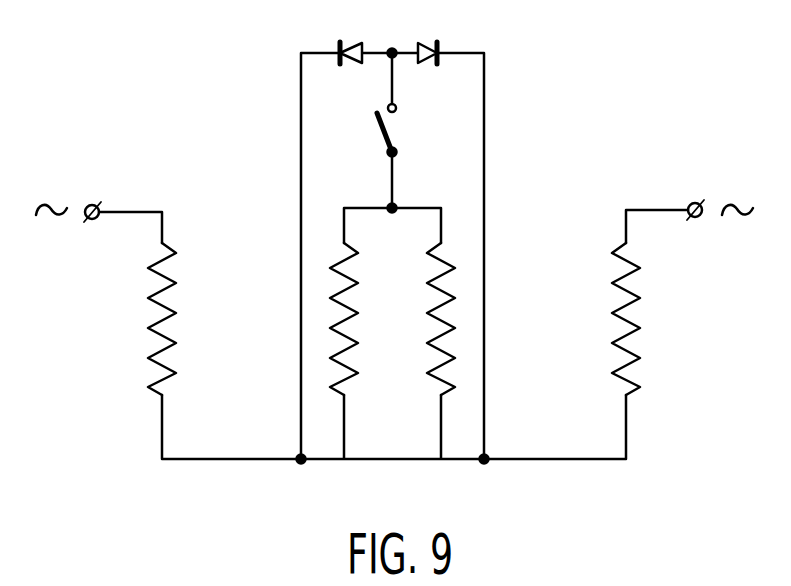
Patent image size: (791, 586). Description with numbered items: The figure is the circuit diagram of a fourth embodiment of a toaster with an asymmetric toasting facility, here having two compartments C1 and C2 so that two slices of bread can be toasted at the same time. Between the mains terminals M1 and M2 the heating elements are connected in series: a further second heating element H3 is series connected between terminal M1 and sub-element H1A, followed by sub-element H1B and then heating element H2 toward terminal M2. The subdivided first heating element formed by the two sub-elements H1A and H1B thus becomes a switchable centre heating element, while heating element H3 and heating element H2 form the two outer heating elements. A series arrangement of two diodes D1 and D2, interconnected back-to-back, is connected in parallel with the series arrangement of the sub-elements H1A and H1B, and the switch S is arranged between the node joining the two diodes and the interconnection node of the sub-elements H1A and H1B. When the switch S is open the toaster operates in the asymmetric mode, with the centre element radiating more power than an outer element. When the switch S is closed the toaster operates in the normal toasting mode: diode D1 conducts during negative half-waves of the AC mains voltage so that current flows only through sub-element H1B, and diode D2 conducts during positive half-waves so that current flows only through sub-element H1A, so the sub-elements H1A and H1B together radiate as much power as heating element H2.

The diode D1 is at (357, 41).
The diode D2 is at (431, 41).
The switch S is at (396, 130).
The sub-element H1A is at (357, 310).
The sub-element H1B is at (436, 365).
The second heating element H3 is at (150, 301).
The heating element H2 is at (633, 303).
The terminal M1 is at (93, 220).
The terminal M2 is at (695, 218).
The compartment C2 is at (249, 334).
The compartment C1 is at (568, 334).